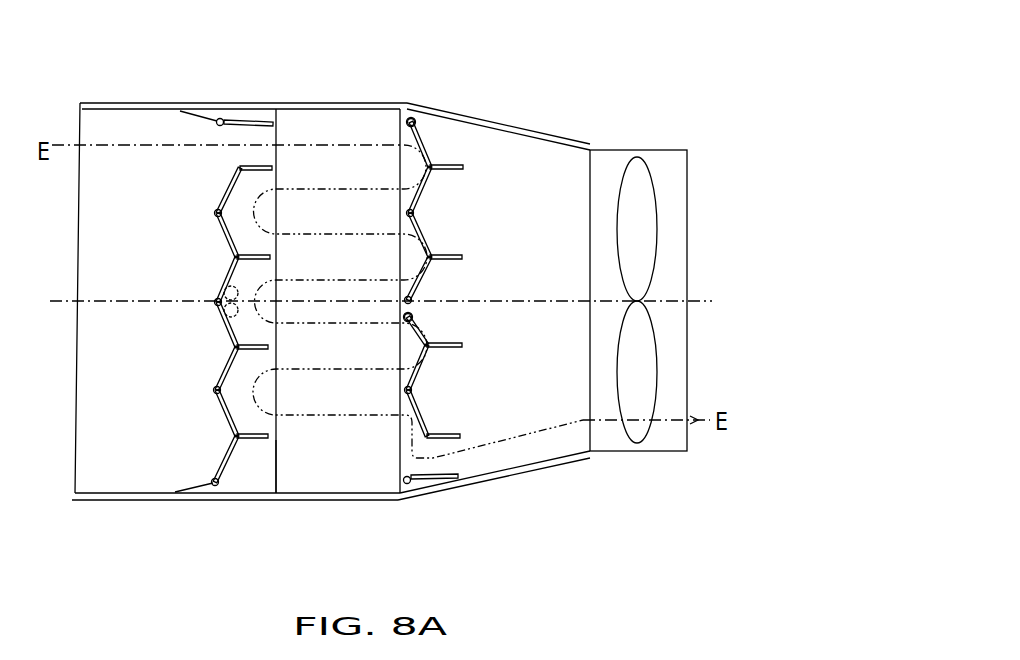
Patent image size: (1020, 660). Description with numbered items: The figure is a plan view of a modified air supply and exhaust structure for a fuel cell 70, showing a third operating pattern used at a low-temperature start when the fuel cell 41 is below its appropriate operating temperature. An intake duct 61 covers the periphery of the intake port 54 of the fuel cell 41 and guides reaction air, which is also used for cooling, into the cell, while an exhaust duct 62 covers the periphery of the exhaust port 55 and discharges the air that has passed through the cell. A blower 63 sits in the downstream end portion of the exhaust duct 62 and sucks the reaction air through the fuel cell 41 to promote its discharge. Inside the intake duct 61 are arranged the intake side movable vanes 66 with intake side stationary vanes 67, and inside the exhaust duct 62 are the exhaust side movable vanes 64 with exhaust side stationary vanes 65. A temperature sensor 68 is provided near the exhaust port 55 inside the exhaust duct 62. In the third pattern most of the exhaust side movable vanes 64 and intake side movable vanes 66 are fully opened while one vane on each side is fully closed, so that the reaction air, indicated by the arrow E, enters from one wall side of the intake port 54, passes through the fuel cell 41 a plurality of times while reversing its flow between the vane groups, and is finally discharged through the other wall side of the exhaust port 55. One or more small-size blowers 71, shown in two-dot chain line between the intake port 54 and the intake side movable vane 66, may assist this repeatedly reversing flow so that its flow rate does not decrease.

The intake duct 61 is at (157, 102).
The fuel cell 41 is at (333, 120).
The exhaust duct 62 is at (582, 142).
The blower 63 is at (638, 157).
The air supply and exhaust structure for a fuel cell 70 is at (542, 84).
The intake side movable vane 66 is at (175, 542).
The intake side stationary vane 67 is at (240, 166).
The small-size blower 71 is at (216, 300).
The exhaust side movable vane 64 is at (448, 513).
The exhaust side stationary vane 65 is at (463, 168).
The exhaust port 55 is at (408, 110).
The temperature sensor 68 is at (405, 320).
The intake port 54 is at (270, 452).